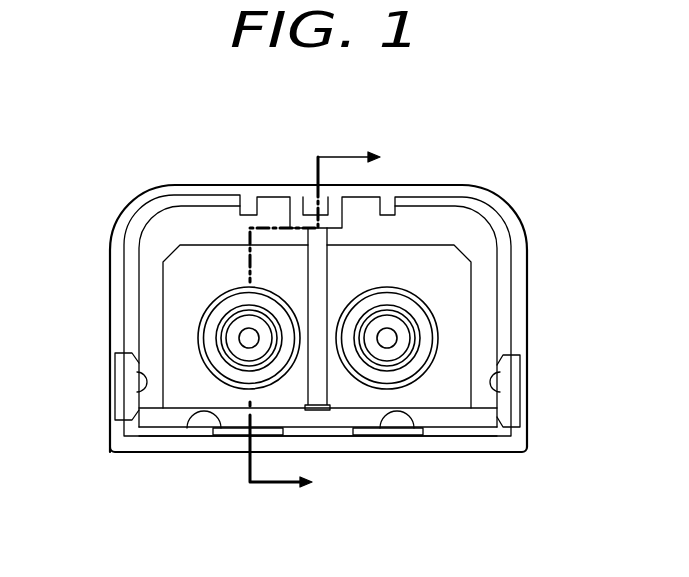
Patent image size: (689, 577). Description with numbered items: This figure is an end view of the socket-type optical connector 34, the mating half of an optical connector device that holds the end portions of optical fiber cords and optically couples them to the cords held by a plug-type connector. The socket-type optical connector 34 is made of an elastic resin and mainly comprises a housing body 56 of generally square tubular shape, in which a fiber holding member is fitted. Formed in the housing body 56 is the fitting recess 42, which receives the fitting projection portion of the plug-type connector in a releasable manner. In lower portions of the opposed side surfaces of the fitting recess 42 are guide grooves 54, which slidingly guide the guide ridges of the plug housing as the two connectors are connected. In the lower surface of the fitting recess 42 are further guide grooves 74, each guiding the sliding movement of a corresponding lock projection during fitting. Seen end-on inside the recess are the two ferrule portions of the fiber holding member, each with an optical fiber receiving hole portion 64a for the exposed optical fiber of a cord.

The socket-type optical connector 34 is at (331, 318).
The housing body 56 is at (134, 198).
The fitting recess 42 is at (488, 275).
The guide grooves 54 is at (137, 392).
The guide grooves 74 is at (188, 428).
The optical fiber receiving hole portion 64a is at (389, 336).